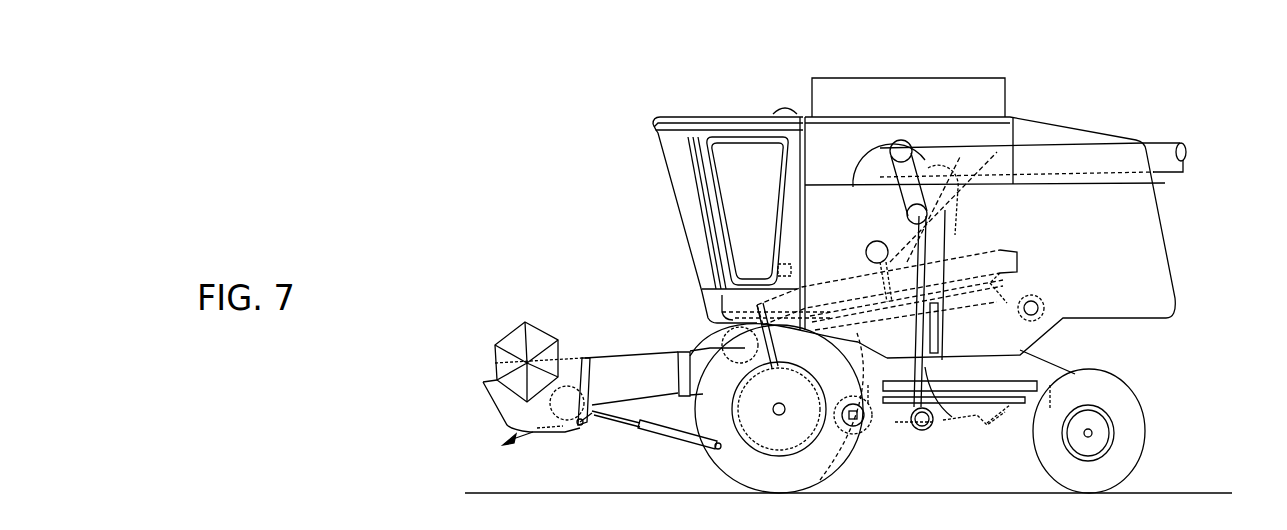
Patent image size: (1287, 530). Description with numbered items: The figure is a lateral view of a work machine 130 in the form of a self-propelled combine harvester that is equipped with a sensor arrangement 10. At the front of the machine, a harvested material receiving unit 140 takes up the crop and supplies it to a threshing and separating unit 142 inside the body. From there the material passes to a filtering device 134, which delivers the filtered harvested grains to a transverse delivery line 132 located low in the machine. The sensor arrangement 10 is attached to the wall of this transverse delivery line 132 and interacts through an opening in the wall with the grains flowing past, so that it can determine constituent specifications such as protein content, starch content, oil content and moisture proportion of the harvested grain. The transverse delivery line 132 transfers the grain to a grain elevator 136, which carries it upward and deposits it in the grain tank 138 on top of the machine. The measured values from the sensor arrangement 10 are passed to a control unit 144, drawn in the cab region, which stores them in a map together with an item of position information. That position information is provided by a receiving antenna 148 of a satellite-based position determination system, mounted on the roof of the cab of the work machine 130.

The work machine 130 is at (694, 82).
The receiving antenna 148 is at (785, 106).
The grain tank 138 is at (890, 222).
The control unit 144 is at (806, 190).
The threshing and separating unit 142 is at (962, 262).
The harvested material receiving unit 140 is at (580, 425).
The sensor arrangement 10 is at (905, 425).
The transverse delivery line 132 is at (921, 431).
The grain elevator 136 is at (968, 430).
The filtering device 134 is at (1006, 413).